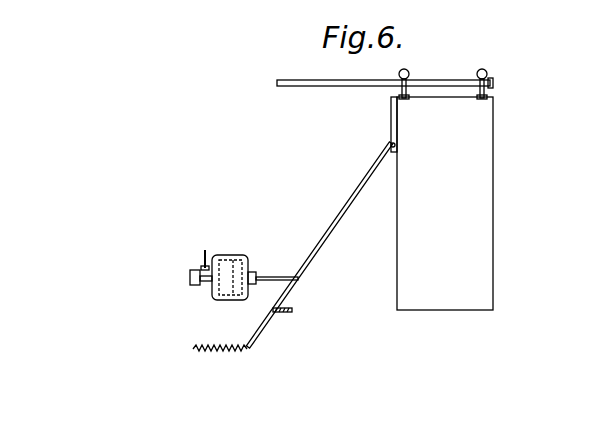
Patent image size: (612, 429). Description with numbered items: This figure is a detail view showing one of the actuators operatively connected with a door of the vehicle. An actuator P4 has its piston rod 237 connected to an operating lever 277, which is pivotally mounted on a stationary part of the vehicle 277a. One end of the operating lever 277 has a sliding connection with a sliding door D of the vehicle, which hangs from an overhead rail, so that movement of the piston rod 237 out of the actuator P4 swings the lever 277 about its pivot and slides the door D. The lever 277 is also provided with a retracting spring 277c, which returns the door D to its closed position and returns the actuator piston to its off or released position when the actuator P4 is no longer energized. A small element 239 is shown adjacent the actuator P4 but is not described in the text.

The sliding door D is at (442, 203).
The operating lever 277 is at (319, 245).
The stationary part of the vehicle 277a is at (290, 312).
The retracting spring 277c is at (218, 336).
The piston rod 237 is at (274, 273).
The actuator P4 is at (219, 267).
The pin 239 is at (191, 277).